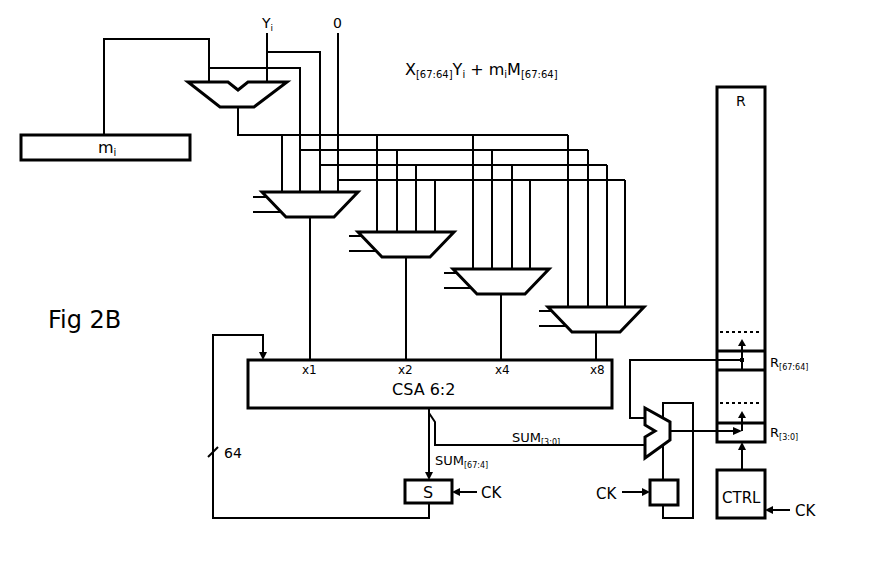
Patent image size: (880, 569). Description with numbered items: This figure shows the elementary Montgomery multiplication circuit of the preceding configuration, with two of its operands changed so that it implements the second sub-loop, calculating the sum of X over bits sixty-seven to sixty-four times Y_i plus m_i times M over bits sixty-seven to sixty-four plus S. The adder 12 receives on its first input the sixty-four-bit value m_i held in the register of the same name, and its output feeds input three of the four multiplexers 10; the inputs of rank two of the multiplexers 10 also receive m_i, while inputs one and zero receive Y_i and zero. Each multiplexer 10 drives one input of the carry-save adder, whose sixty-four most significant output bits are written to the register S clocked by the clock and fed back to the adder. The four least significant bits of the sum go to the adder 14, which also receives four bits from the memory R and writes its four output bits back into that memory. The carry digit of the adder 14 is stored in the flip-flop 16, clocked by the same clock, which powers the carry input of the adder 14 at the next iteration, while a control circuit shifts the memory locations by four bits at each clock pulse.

The adder 12 is at (214, 102).
The multiplexer 10 is at (415, 253).
The adder 14 is at (648, 418).
The flip-flop 16 is at (671, 499).